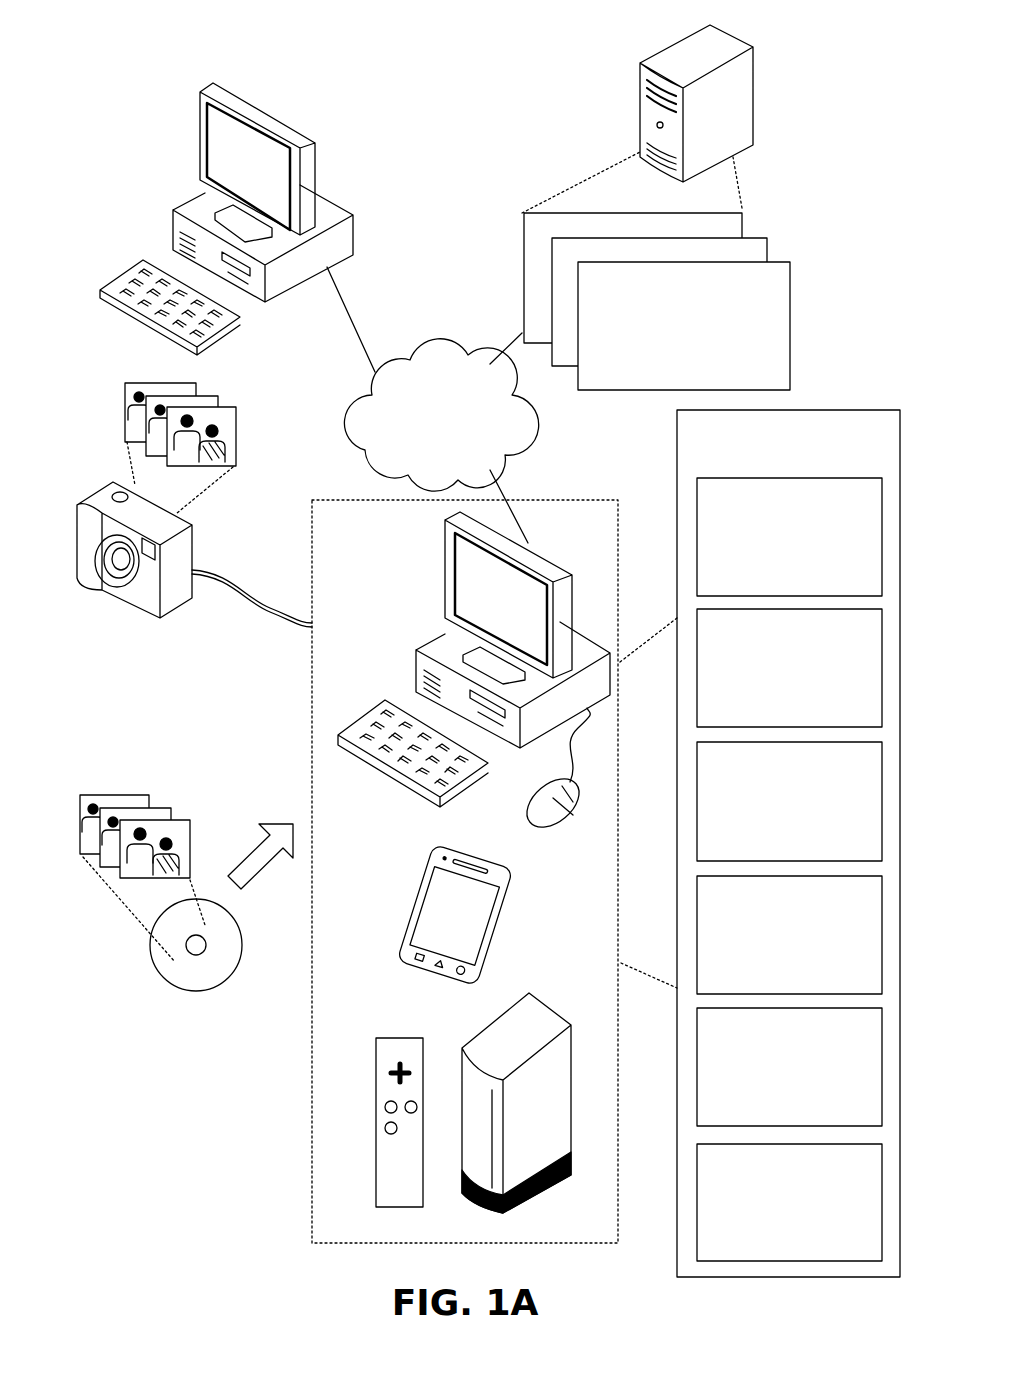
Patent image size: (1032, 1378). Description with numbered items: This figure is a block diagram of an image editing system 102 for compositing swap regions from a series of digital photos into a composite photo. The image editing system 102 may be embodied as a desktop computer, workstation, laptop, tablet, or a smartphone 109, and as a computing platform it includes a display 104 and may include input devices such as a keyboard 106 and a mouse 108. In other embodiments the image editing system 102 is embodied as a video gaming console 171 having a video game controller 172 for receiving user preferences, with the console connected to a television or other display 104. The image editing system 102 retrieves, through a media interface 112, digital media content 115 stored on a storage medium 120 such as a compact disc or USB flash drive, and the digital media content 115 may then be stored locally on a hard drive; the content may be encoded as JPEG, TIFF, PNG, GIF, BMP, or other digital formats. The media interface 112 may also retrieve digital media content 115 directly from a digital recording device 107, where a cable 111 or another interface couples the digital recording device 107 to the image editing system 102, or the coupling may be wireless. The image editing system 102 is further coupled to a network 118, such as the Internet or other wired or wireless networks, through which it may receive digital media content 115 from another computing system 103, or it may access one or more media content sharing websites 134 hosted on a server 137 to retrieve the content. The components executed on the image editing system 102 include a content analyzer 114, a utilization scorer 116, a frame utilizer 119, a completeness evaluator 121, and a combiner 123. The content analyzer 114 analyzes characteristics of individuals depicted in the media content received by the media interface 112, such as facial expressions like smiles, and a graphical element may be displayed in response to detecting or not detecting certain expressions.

The image editing system 102 is at (788, 843).
The computing system 103 is at (200, 110).
The display 104 is at (445, 575).
The keyboard 106 is at (393, 775).
The digital recording device 107 is at (97, 490).
The mouse 108 is at (532, 825).
The smartphone 109 is at (427, 873).
The cable 111 is at (222, 578).
The media interface 112 is at (789, 537).
The content analyzer 114 is at (789, 668).
The digital media content 115 is at (127, 783).
The utilization scorer 116 is at (789, 801).
The network 118 is at (441, 415).
The frame utilizer 119 is at (789, 935).
The storage medium 120 is at (243, 942).
The completeness evaluator 121 is at (789, 1067).
The combiner 123 is at (789, 1202).
The media content sharing website 134 is at (657, 301).
The server 137 is at (665, 42).
The video gaming console 171 is at (488, 1027).
The video game controller 172 is at (375, 1058).